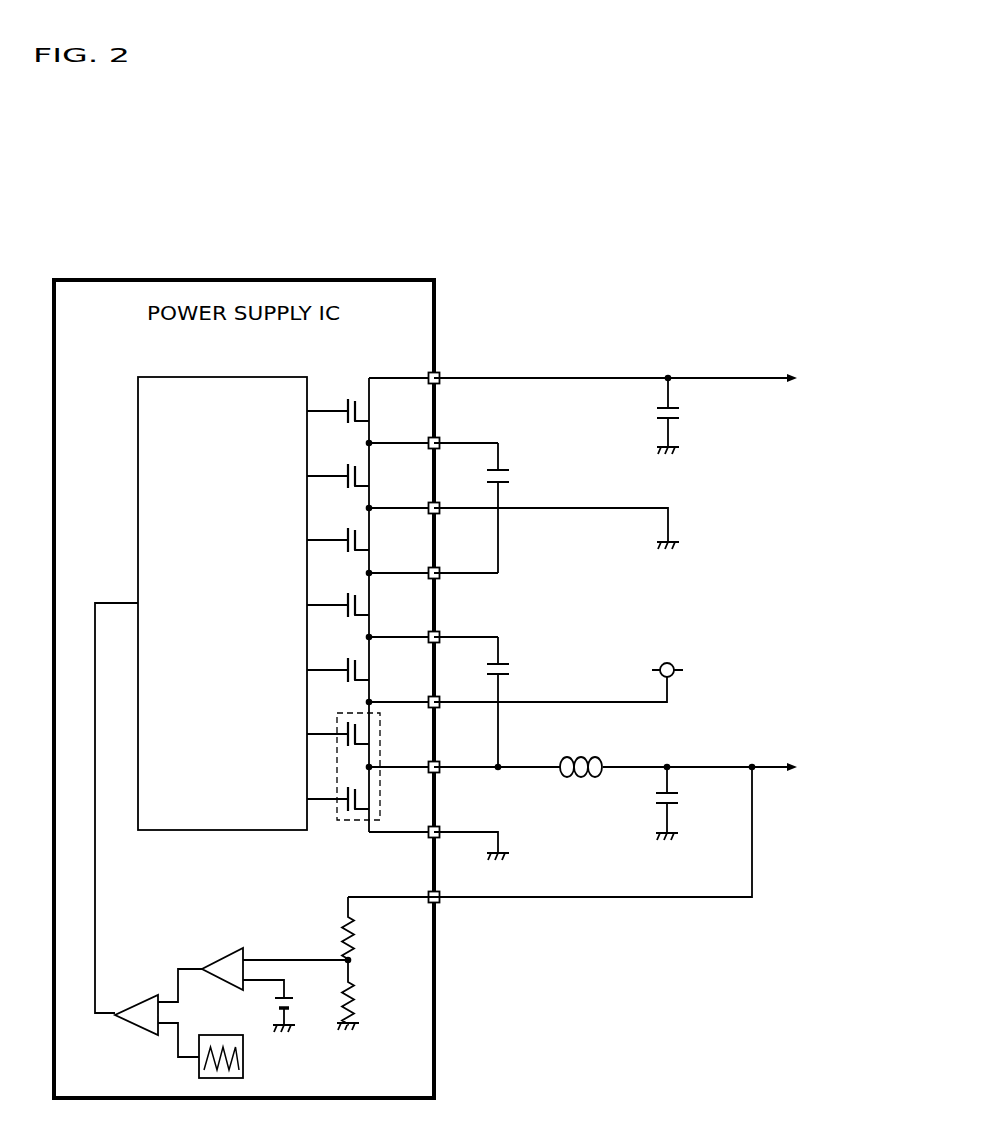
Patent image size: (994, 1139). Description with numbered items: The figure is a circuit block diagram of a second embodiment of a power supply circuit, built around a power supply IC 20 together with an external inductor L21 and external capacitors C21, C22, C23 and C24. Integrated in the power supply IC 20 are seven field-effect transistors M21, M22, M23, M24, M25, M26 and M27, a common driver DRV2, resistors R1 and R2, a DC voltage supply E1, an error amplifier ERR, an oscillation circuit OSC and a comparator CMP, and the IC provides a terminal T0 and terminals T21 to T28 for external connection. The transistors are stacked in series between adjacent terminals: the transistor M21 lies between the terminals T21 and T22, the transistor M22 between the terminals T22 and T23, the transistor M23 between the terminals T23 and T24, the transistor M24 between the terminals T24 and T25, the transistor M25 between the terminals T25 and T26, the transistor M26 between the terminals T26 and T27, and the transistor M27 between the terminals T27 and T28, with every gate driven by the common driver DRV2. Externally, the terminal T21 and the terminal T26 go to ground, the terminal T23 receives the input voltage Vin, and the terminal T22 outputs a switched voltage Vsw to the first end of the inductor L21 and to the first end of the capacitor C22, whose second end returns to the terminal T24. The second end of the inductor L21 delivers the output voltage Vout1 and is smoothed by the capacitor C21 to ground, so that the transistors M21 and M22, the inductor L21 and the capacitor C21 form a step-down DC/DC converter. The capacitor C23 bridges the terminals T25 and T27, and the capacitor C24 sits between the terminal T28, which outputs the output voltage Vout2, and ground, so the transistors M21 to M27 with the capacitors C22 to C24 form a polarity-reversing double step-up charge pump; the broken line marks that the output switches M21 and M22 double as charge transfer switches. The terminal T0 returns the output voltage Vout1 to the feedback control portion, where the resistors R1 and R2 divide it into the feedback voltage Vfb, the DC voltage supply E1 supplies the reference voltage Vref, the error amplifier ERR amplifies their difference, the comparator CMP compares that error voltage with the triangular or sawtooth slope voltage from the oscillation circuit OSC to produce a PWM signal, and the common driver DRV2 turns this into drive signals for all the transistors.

The power supply IC 20 is at (243, 278).
The common driver DRV2 is at (229, 377).
The field-effect transistor M27 is at (372, 415).
The field-effect transistor M26 is at (372, 480).
The field-effect transistor M25 is at (372, 544).
The field-effect transistor M24 is at (372, 609).
The field-effect transistor M23 is at (372, 674).
The field-effect transistor M22 is at (372, 738).
The field-effect transistor M21 is at (372, 803).
The terminal T28 is at (440, 385).
The terminal T27 is at (440, 450).
The terminal T26 is at (440, 515).
The terminal T25 is at (440, 580).
The terminal T24 is at (440, 644).
The terminal T23 is at (440, 709).
The terminal T22 is at (440, 774).
The terminal T21 is at (440, 839).
The terminal T0 is at (440, 904).
The capacitor C24 is at (681, 414).
The capacitor C23 is at (511, 478).
The capacitor C22 is at (511, 671).
The capacitor C21 is at (680, 799).
The inductor L21 is at (580, 756).
The resistor R1 is at (362, 931).
The resistor R2 is at (362, 996).
The DC voltage supply E1 is at (292, 1003).
The error amplifier ERR is at (228, 953).
The comparator CMP is at (147, 996).
The oscillation circuit OSC is at (226, 1034).
The input voltage Vin is at (575, 680).
The switched voltage Vsw is at (508, 783).
The output voltage Vout1 is at (826, 768).
The output voltage Vout2 is at (828, 381).
The feedback voltage Vfb is at (364, 960).
The reference voltage Vref is at (285, 983).